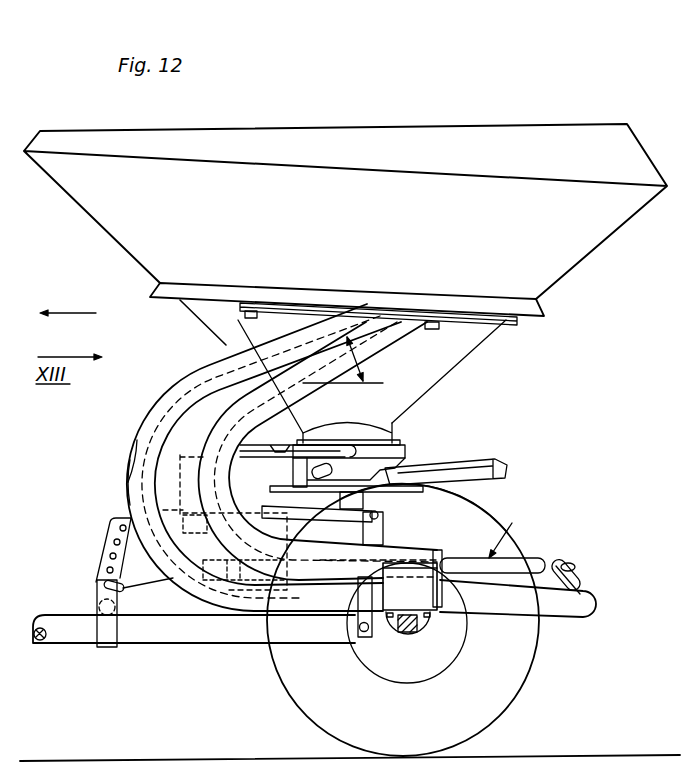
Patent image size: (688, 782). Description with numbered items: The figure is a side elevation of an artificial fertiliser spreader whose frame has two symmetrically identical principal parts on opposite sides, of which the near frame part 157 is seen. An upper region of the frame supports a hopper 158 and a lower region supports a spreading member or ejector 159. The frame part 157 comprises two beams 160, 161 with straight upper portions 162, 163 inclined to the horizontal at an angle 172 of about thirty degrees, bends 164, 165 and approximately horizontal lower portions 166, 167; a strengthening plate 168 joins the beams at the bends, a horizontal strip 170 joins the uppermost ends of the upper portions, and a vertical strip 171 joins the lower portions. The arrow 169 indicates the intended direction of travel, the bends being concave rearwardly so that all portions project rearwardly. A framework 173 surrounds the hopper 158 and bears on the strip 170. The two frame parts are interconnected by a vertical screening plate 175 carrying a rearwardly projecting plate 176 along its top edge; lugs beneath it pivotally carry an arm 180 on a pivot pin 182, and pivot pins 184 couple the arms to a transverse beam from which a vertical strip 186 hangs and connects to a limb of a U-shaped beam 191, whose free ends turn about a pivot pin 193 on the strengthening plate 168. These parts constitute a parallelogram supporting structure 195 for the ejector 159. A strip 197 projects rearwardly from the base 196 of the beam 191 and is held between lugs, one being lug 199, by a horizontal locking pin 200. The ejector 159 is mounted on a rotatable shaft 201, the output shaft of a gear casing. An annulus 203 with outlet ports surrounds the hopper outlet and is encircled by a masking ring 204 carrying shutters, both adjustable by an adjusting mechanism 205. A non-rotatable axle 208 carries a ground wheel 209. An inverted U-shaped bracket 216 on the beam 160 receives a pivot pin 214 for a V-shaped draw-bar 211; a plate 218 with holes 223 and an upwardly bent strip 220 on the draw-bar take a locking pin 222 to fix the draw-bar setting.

The frame part 157 is at (125, 462).
The hopper 158 is at (597, 250).
The spreading member or ejector 159 is at (498, 462).
The beam 160 is at (156, 400).
The beam 161 is at (231, 403).
The straight upper portion 162 is at (243, 338).
The straight upper portion 163 is at (378, 323).
The bend 164 is at (128, 491).
The bend 165 is at (207, 437).
The lower portion 166 is at (510, 614).
The lower portion 167 is at (432, 549).
The strengthening plate 168 is at (143, 440).
The arrow indicating direction of travel 169 is at (69, 302).
The horizontal strip 170 is at (432, 329).
The vertical strip 171 is at (441, 600).
The angle 172 is at (362, 360).
The framework 173 is at (345, 292).
The screening plate 175 is at (221, 526).
The rearwardly projecting plate 176 is at (198, 456).
The arm 180 is at (280, 508).
The pivot pin 182 is at (202, 534).
The pivot pin 184 is at (383, 512).
The vertical strip 186 is at (420, 541).
The U-shaped beam 191 is at (533, 520).
The pivot pin 193 is at (245, 556).
The supporting structure 195 is at (445, 533).
The base of the U-shaped beam 196 is at (540, 556).
The strip 197 is at (553, 558).
The lug 199 is at (583, 581).
The locking pin 200 is at (580, 566).
The rotatable shaft 201 is at (340, 492).
The annulus 203 is at (400, 440).
The ring 204 is at (405, 455).
The adjusting mechanism 205 is at (265, 444).
The axle 208 is at (408, 636).
The ground wheel 209 is at (494, 722).
The draw-bar 211 is at (207, 640).
The pivot pin 214 is at (363, 637).
The inverted U-shaped bracket 216 is at (357, 592).
The plate 218 is at (108, 533).
The upwardly bent strip 220 is at (108, 647).
The locking pin 222 is at (127, 590).
The holes 223 is at (102, 558).